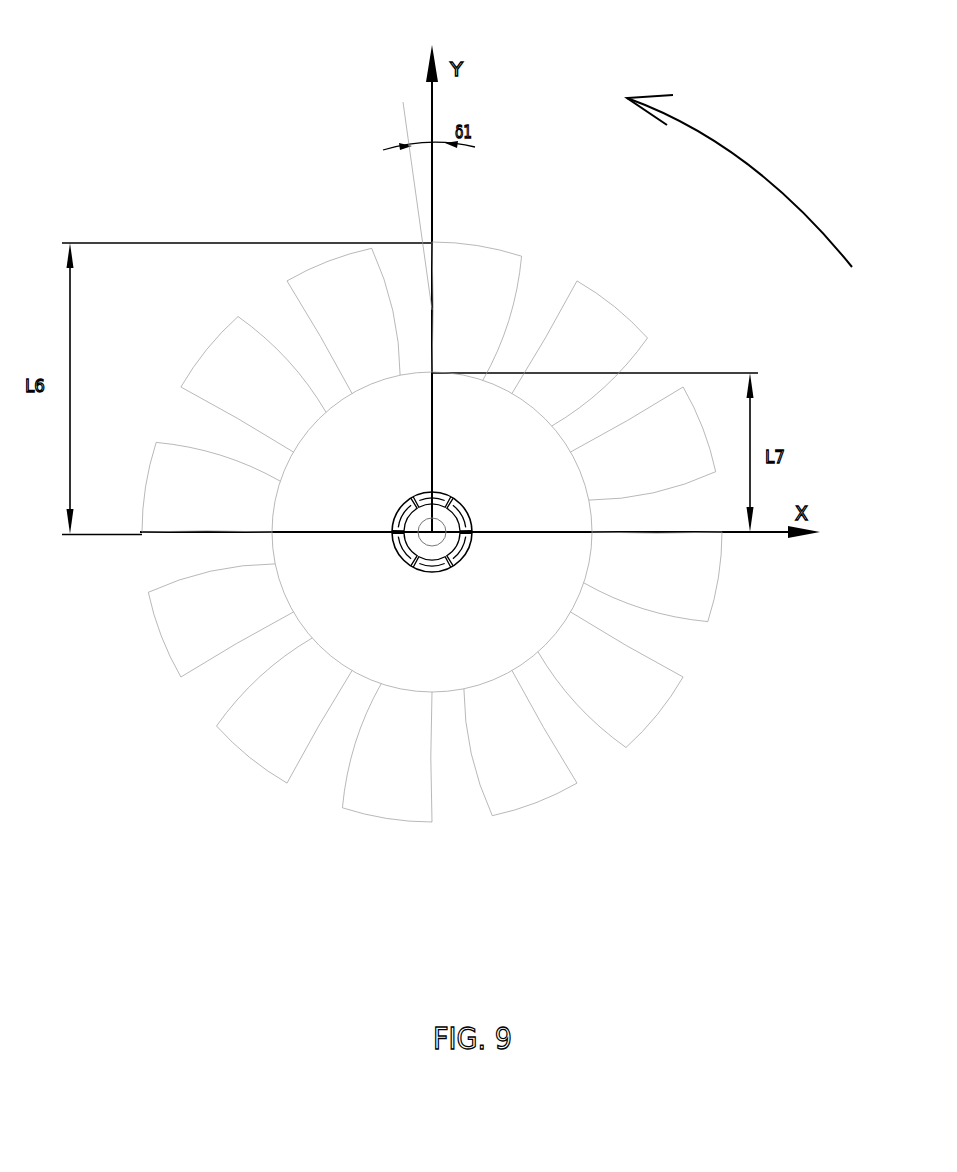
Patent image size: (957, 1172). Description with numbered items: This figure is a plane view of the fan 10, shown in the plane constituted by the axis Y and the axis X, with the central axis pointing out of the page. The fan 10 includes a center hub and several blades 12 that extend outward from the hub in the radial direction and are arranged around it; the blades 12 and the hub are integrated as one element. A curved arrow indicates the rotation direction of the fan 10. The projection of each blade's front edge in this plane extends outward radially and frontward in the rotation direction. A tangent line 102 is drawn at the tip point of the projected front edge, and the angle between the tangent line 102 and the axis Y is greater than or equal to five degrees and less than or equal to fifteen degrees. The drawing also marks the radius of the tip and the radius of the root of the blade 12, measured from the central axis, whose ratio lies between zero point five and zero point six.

The fan 10 is at (175, 100).
The blade 12 is at (638, 718).
The tangent line 102 is at (445, 240).